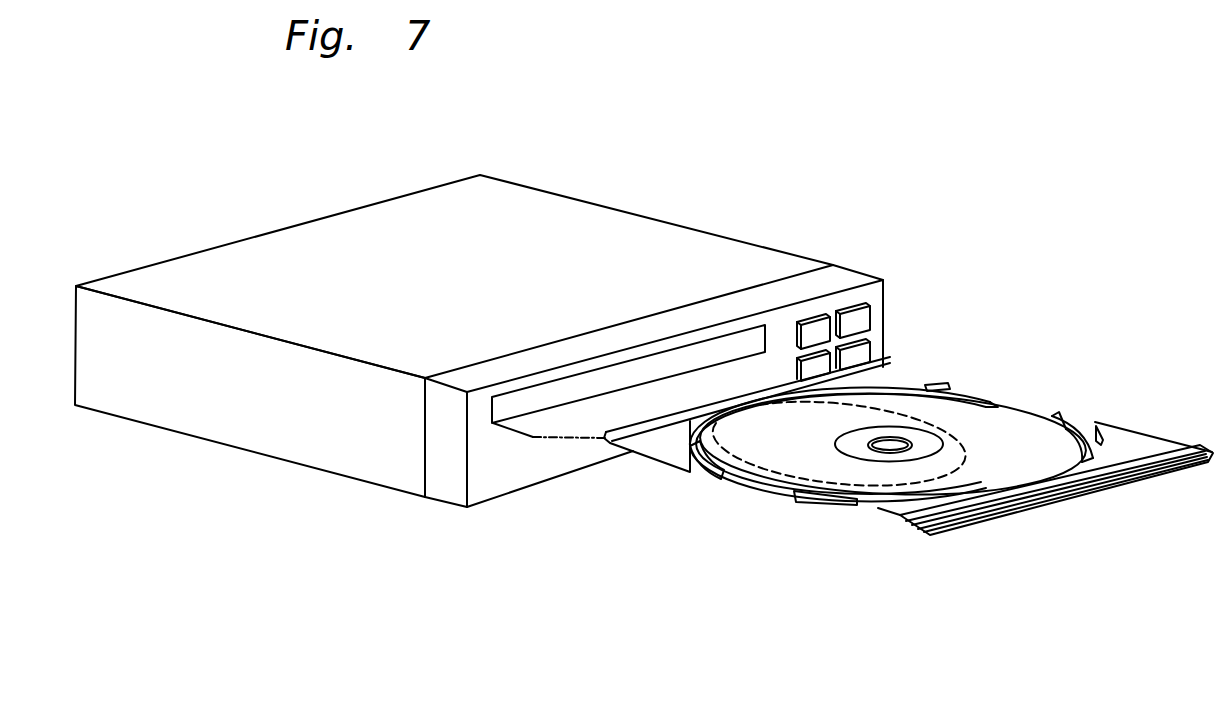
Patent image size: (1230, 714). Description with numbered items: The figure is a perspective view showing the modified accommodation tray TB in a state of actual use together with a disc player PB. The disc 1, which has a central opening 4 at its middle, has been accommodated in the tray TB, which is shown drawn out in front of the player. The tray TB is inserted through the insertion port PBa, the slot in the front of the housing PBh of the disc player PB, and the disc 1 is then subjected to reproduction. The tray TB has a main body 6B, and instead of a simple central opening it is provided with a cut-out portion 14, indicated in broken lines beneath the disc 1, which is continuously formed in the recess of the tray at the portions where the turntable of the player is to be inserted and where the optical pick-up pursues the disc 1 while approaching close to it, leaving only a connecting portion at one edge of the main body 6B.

The disc player PB is at (479, 357).
The housing PBh is at (302, 453).
The insertion port PBa is at (545, 398).
The accommodation tray TB is at (914, 462).
The main body 6B is at (860, 532).
The disc 1 is at (1013, 428).
The central opening 4 is at (893, 438).
The cut-out portion 14 is at (777, 452).